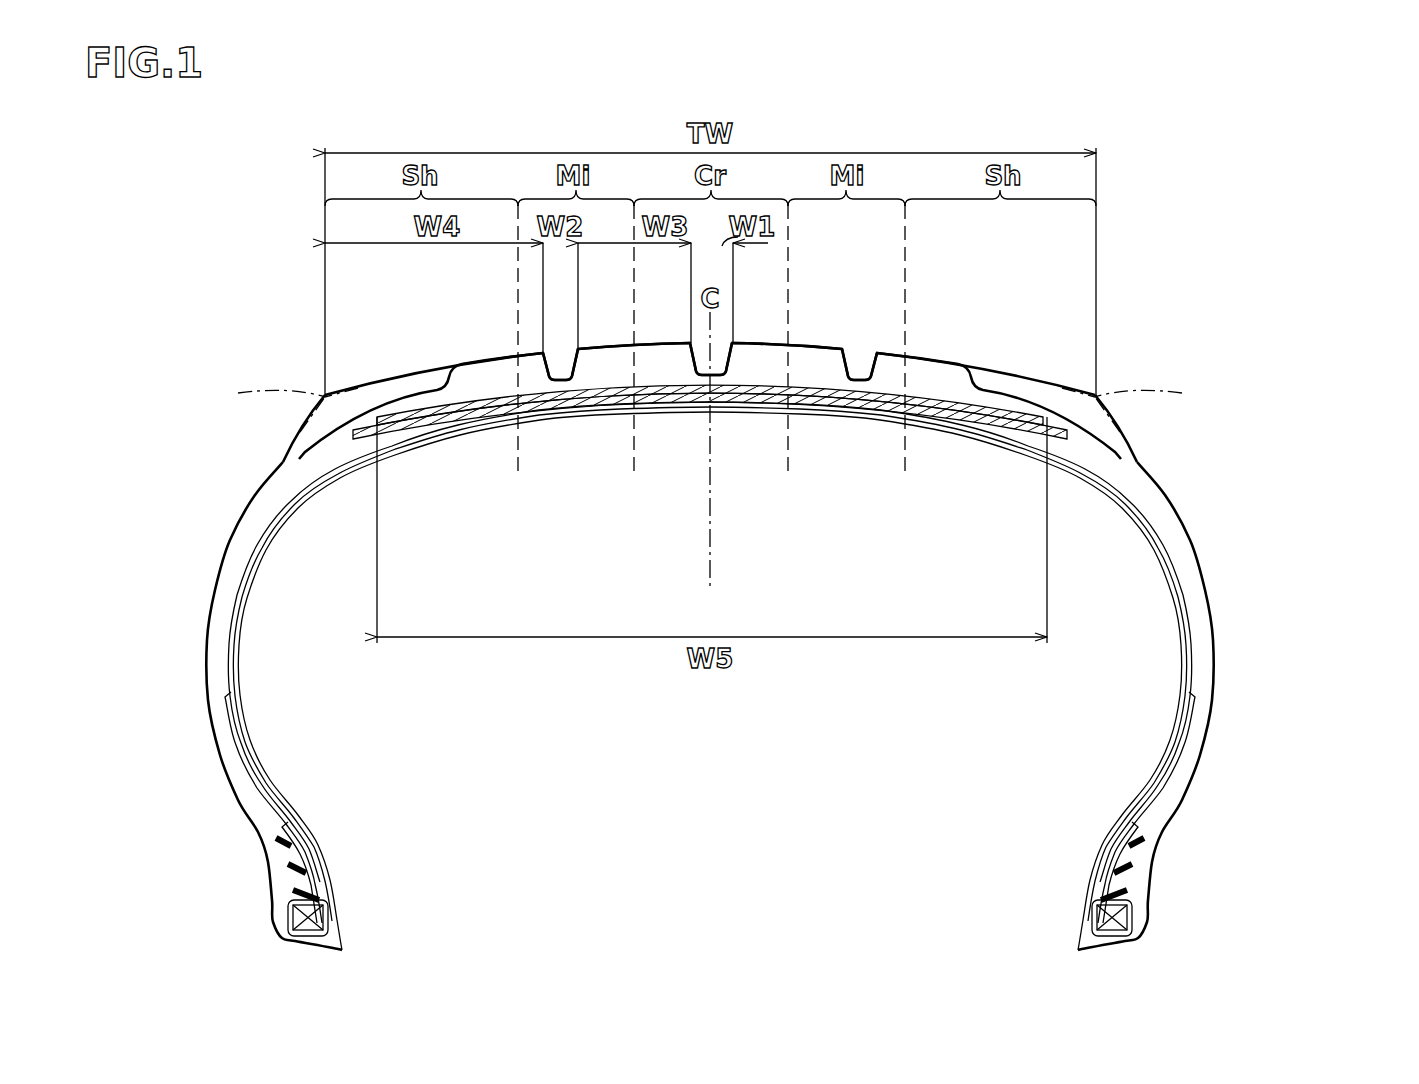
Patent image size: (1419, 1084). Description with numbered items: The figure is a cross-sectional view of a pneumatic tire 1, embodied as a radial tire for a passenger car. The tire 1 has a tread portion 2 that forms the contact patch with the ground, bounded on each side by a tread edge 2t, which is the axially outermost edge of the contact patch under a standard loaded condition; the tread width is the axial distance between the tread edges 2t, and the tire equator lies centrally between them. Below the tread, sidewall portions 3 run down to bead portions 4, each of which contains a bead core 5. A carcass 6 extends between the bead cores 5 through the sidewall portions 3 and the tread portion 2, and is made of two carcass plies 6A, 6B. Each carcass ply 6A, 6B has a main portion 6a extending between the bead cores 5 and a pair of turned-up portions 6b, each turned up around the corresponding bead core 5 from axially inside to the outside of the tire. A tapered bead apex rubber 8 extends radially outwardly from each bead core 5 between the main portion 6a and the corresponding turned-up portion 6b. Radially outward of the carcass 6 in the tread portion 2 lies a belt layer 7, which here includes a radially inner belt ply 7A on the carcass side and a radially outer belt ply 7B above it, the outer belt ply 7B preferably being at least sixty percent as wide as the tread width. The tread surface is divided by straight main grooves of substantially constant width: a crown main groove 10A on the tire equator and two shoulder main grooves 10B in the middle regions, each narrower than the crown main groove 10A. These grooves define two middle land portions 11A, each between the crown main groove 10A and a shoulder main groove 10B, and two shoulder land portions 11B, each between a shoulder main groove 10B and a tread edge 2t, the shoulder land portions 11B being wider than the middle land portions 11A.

The tire 1 is at (1218, 180).
The tread portion 2 is at (1016, 318).
The tread edge 2t is at (709, 405).
The sidewall portion 3 is at (194, 591).
The bead portion 4 is at (250, 906).
The bead core 5 is at (312, 915).
The carcass 6 is at (1376, 660).
The carcass ply 6A is at (1312, 623).
The carcass ply 6B is at (1312, 772).
The main portion 6a is at (1190, 680).
The turned-up portion 6b is at (1200, 708).
The belt layer 7 is at (960, 548).
The inner belt ply 7A is at (938, 403).
The outer belt ply 7B is at (848, 393).
The bead apex rubber 8 is at (293, 858).
The crown main groove 10A is at (718, 360).
The shoulder main groove 10B is at (560, 368).
The middle land portion 11A is at (602, 365).
The shoulder land portion 11B is at (490, 373).